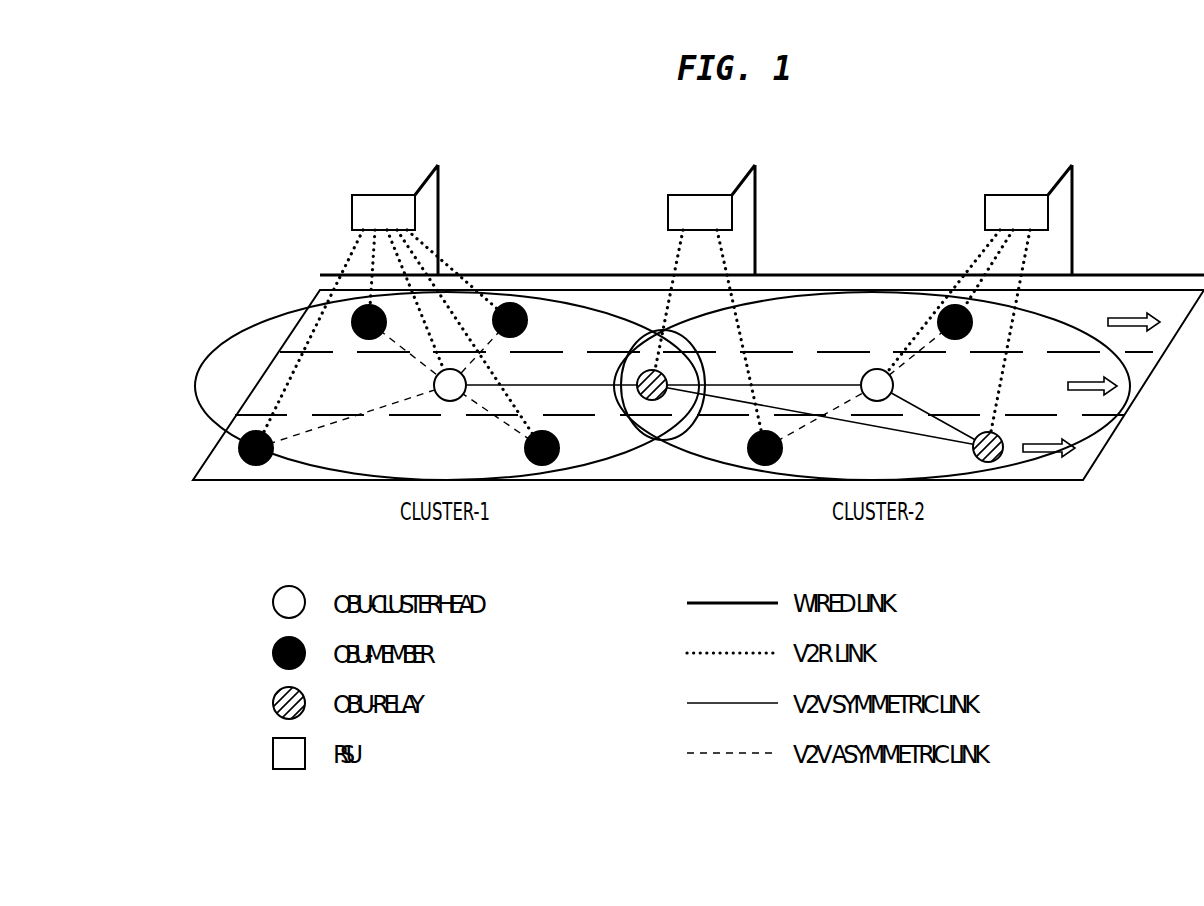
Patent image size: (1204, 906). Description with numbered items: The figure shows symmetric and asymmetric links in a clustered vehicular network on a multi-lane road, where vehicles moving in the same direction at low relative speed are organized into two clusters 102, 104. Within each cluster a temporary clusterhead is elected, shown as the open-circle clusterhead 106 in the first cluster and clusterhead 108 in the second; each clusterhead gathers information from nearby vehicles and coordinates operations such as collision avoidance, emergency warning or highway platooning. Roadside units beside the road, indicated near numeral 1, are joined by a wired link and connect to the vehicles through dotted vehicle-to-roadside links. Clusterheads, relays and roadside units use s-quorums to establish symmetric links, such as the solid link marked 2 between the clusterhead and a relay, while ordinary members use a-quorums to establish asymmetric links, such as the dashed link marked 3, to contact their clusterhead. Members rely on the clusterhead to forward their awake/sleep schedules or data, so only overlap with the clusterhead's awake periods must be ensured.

The road side unit (RSU) 1 is at (365, 225).
The V2V symmetric link 2 is at (551, 372).
The V2V asymmetric link 3 is at (353, 416).
The cluster 102 is at (258, 321).
The cluster 104 is at (1103, 423).
The clusterhead 106 is at (437, 398).
The clusterhead 108 is at (873, 367).